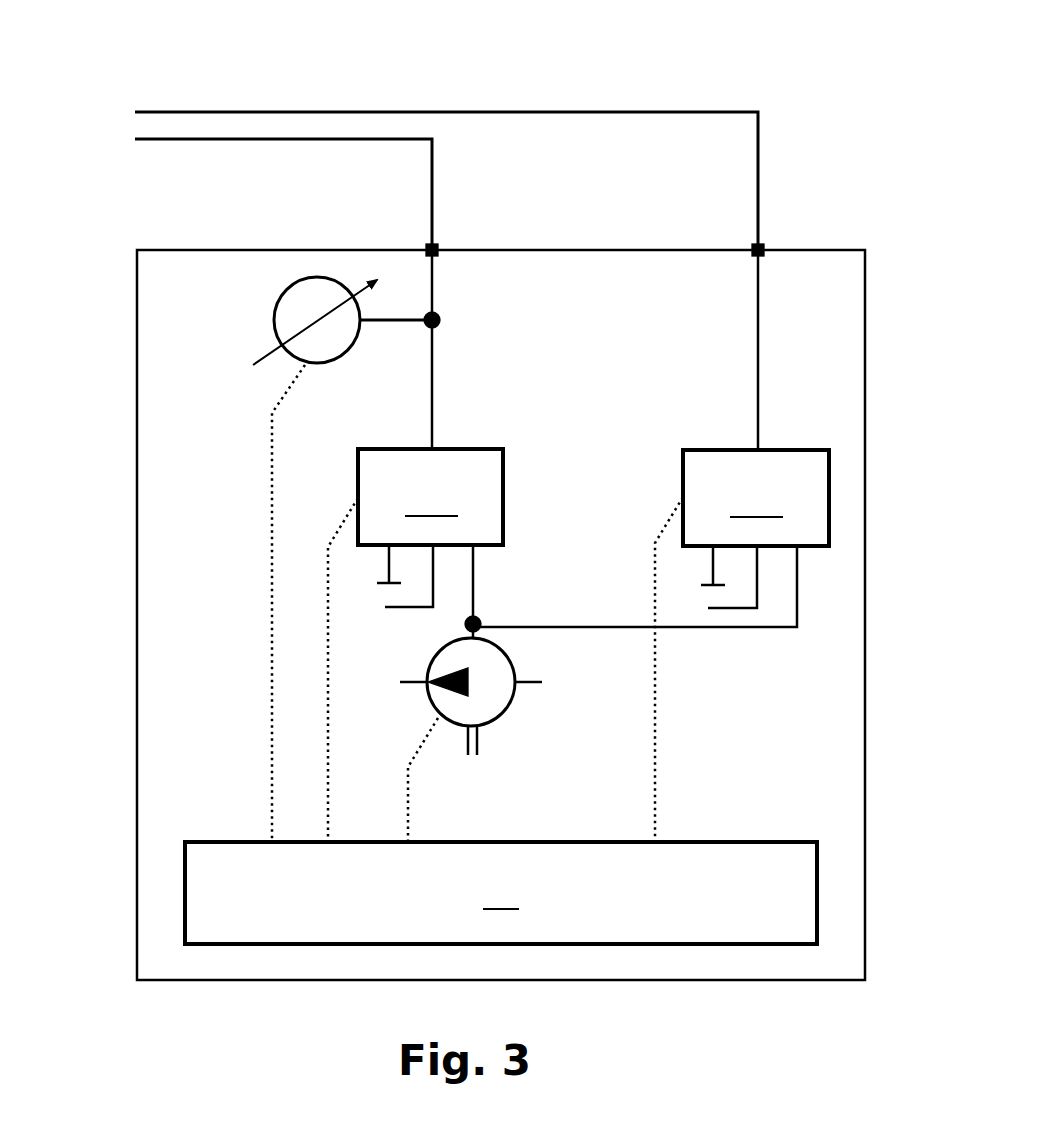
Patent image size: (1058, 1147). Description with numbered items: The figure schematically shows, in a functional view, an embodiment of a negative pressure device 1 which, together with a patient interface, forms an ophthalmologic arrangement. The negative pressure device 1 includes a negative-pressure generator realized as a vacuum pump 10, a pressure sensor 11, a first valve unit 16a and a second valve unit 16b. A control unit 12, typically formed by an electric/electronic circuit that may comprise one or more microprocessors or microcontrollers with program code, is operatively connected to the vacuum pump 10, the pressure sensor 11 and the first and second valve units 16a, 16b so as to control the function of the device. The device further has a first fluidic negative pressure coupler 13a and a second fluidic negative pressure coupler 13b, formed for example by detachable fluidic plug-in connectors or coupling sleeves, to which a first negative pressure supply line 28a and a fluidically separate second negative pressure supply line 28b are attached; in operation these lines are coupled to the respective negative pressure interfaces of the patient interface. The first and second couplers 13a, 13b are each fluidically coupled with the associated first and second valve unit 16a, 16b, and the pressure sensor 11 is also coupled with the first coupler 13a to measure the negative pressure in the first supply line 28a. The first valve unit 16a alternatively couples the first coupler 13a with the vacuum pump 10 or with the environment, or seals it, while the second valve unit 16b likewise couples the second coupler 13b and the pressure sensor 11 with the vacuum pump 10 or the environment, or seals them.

The negative pressure device 1 is at (107, 670).
The first negative pressure supply line 28a is at (680, 93).
The second negative pressure supply line 28b is at (180, 152).
The first fluidic negative pressure coupler 13a is at (768, 237).
The second fluidic negative pressure coupler 13b is at (415, 247).
The pressure sensor 11 is at (288, 317).
The first valve unit 16a is at (651, 538).
The second valve unit 16b is at (430, 544).
The vacuum pump 10 is at (513, 708).
The control unit 12 is at (501, 654).